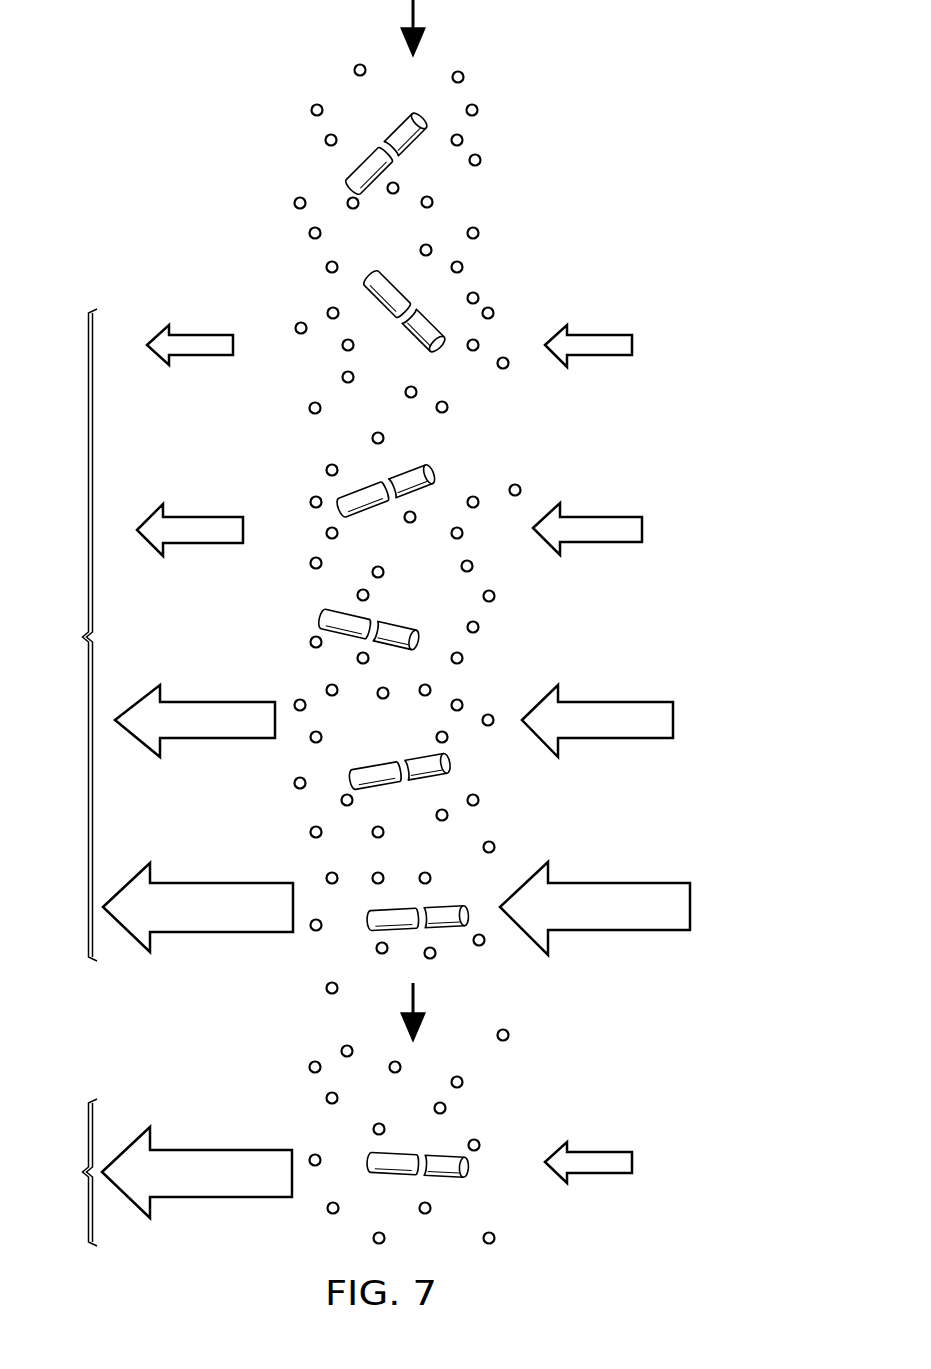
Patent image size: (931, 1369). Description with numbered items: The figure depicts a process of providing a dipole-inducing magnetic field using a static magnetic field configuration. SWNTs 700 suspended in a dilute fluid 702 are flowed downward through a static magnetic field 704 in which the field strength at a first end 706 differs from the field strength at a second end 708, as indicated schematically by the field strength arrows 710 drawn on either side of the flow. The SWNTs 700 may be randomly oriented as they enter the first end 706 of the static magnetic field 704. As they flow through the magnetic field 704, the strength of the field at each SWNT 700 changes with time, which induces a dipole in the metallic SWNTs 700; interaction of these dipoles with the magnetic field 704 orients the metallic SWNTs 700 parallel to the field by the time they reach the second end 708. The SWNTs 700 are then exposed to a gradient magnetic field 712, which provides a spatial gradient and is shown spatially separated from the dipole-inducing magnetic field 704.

The SWNTs 700 is at (402, 118).
The dilute fluid 702 is at (463, 75).
The static magnetic field 704 is at (66, 635).
The first end 706 is at (186, 285).
The second end 708 is at (186, 990).
The field strength arrows 710 is at (597, 333).
The gradient magnetic field 712 is at (333, 1172).